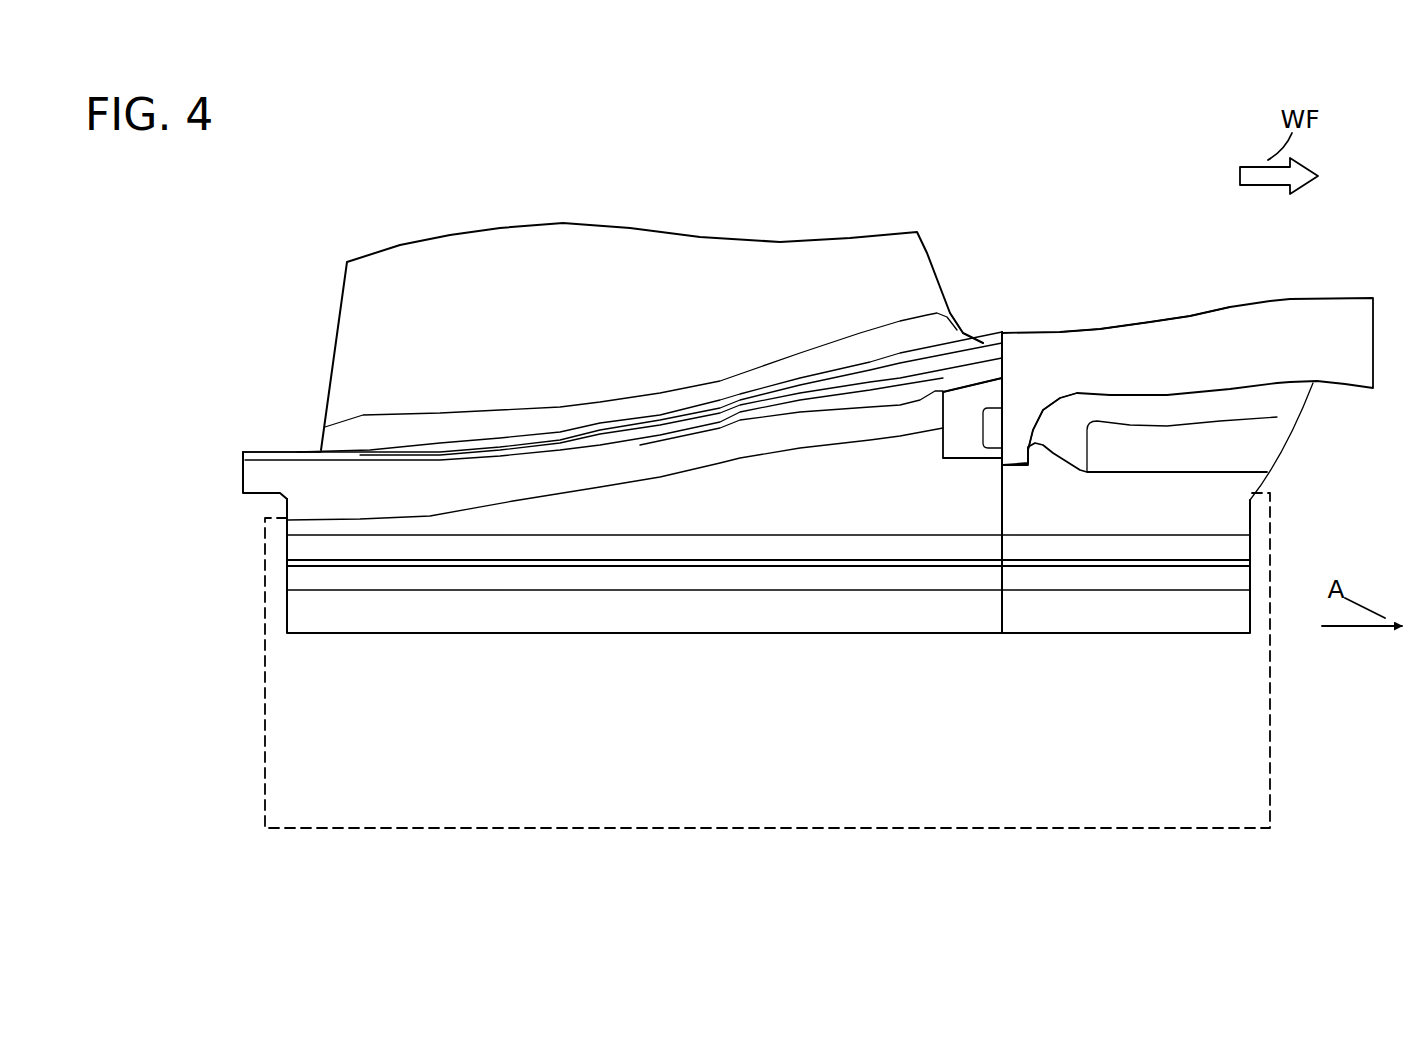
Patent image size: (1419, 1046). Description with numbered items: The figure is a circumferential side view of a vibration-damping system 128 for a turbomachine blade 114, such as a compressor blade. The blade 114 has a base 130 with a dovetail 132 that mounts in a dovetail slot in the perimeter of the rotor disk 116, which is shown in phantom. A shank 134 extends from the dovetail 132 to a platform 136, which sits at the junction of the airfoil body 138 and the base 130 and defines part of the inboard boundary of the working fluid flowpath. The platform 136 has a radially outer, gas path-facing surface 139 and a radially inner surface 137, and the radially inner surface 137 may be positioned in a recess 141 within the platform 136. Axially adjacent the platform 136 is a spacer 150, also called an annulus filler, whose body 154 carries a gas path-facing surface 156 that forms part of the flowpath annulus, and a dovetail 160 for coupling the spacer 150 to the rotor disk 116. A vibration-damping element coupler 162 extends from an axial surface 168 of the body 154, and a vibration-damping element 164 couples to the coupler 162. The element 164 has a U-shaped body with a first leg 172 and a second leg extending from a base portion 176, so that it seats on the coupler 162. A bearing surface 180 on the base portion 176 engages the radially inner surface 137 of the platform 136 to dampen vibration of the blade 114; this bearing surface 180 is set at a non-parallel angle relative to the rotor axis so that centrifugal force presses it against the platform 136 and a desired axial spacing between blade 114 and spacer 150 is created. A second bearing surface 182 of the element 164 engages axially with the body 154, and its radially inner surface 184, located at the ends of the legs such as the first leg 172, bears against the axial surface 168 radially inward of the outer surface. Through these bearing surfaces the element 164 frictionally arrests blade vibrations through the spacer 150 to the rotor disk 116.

The blade 114 is at (330, 254).
The rotor disk 116 is at (1225, 740).
The vibration-damping system 128 is at (1010, 300).
The base 130 is at (278, 559).
The dovetail 132 is at (370, 578).
The shank 134 is at (443, 522).
The platform 136 is at (234, 450).
The radially inner surface 137 is at (913, 407).
The airfoil body 138 is at (570, 247).
The radially outer surface 139 is at (280, 447).
The recess 141 is at (933, 402).
The spacer 150 is at (1286, 294).
The body 154 is at (1243, 443).
The gas path-facing surface 156 is at (1190, 320).
The dovetail 160 is at (1210, 578).
The vibration-damping element coupler 162 is at (993, 425).
The vibration-damping element 164 is at (966, 393).
The axial surface 168 is at (1002, 472).
The first leg 172 is at (962, 445).
The base portion 176 is at (1003, 380).
The bearing surface 180 is at (975, 338).
The bearing surface 182 is at (990, 390).
The radially inner surface 184 is at (1005, 462).